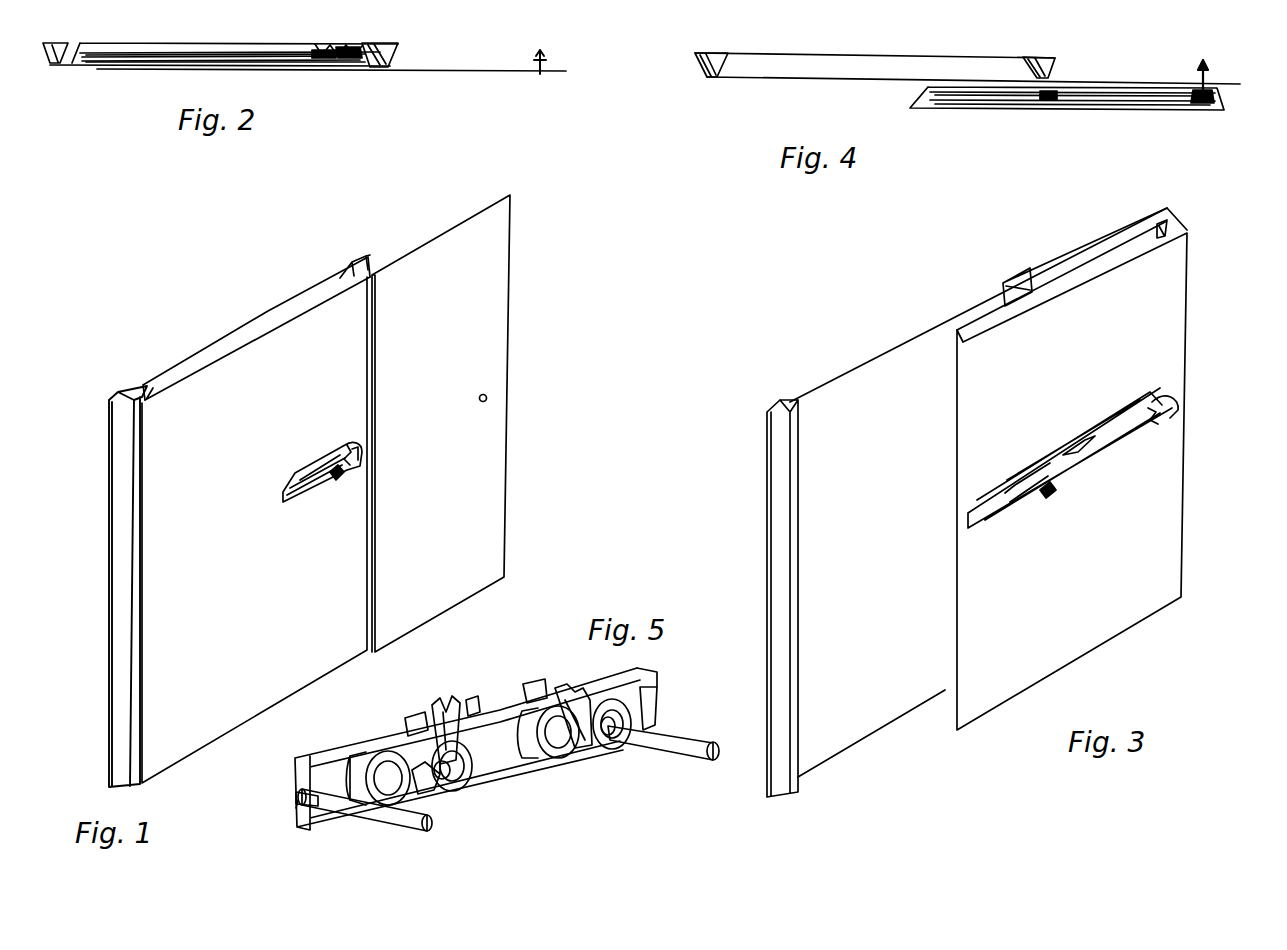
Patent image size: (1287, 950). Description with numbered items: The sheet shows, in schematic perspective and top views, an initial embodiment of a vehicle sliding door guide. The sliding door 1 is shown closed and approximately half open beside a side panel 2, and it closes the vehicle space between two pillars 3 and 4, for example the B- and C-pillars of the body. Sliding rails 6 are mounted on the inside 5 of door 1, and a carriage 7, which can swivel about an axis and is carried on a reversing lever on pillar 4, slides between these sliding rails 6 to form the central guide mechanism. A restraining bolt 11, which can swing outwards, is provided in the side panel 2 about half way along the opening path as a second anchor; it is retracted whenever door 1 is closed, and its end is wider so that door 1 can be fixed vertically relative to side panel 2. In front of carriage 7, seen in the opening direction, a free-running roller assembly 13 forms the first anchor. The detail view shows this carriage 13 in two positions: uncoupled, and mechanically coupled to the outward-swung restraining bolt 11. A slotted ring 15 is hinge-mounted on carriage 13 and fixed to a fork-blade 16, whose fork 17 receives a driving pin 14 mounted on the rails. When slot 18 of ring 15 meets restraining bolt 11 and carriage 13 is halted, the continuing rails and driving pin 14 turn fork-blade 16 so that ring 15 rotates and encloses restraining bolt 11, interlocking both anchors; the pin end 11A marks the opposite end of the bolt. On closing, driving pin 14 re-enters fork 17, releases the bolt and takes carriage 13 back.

In FIG. 2, the sliding door 1 is at (105, 66).
In FIG. 4, the sliding door 1 is at (975, 109).
In FIG. 1, the sliding door 1 is at (214, 670).
In FIG. 3, the sliding door 1 is at (1165, 315).
In FIG. 2, the side panel 2 is at (462, 72).
In FIG. 4, the side panel 2 is at (967, 68).
In FIG. 1, the side panel 2 is at (465, 300).
In FIG. 3, the side panel 2 is at (1168, 215).
In FIG. 5, the side panel 2 is at (348, 738).
In FIG. 2, the pillar 3 is at (48, 66).
In FIG. 4, the pillar 3 is at (700, 70).
In FIG. 1, the pillar 3 is at (122, 586).
In FIG. 3, the pillar 3 is at (783, 457).
In FIG. 2, the pillar 4 is at (395, 60).
In FIG. 4, the pillar 4 is at (1052, 72).
In FIG. 1, the pillar 4 is at (375, 265).
In FIG. 3, the pillar 4 is at (1035, 275).
In FIG. 2, the inside of door 5 is at (148, 37).
In FIG. 2, the sliding rails 6 is at (276, 62).
In FIG. 4, the sliding rails 6 is at (1112, 110).
In FIG. 1, the sliding rails 6 is at (285, 513).
In FIG. 3, the sliding rails 6 is at (1100, 455).
In FIG. 5, the sliding rails 6 is at (548, 770).
In FIG. 2, the carriage 7 is at (325, 58).
In FIG. 4, the carriage 7 is at (1048, 108).
In FIG. 1, the carriage 7 is at (322, 492).
In FIG. 3, the carriage 7 is at (1050, 500).
In FIG. 2, the restraining bolt 11 is at (546, 62).
In FIG. 4, the restraining bolt 11 is at (1208, 90).
In FIG. 1, the restraining bolt 11 is at (487, 398).
In FIG. 5, the restraining bolt 11 is at (388, 830).
In FIG. 5, the pin end 11A is at (293, 802).
In FIG. 2, the roller assembly 13 is at (352, 58).
In FIG. 4, the roller assembly 13 is at (1200, 110).
In FIG. 1, the roller assembly 13 is at (343, 470).
In FIG. 3, the roller assembly 13 is at (1160, 420).
In FIG. 5, the roller assembly 13 is at (440, 790).
In FIG. 5, the driving pin 14 is at (424, 712).
In FIG. 5, the slotted ring 15 is at (545, 748).
In FIG. 5, the fork-blade 16 is at (474, 700).
In FIG. 5, the fork 17 is at (452, 698).
In FIG. 5, the slot 18 is at (450, 778).